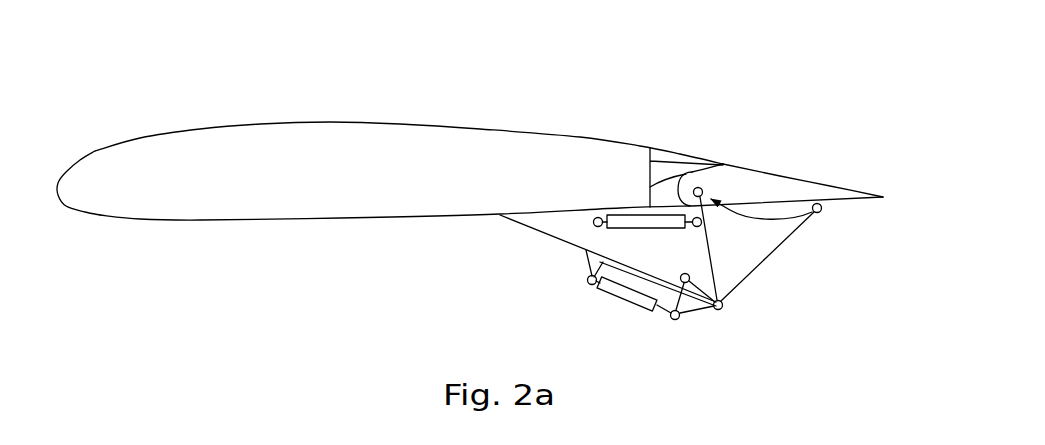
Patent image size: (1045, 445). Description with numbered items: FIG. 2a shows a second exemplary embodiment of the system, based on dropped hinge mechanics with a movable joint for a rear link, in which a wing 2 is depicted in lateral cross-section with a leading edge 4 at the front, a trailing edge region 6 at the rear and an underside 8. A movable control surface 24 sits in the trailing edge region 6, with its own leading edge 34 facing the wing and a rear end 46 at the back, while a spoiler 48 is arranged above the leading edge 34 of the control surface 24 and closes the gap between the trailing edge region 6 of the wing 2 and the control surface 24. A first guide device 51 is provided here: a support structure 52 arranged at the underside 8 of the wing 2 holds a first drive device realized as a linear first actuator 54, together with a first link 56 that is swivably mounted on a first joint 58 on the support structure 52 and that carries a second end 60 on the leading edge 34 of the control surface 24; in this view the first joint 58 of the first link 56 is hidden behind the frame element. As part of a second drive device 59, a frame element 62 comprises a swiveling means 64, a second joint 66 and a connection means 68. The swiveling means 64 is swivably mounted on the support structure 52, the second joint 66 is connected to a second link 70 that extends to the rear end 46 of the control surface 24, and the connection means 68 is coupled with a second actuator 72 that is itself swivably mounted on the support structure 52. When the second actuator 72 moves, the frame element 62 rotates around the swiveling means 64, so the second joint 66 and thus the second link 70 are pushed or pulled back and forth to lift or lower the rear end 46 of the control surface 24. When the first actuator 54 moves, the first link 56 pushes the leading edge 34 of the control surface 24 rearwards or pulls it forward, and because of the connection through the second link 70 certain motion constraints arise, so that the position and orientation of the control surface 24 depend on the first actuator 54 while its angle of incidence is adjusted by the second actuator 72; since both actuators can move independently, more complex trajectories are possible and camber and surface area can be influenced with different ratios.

The wing 2 is at (488, 185).
The leading edge 4 is at (59, 176).
The trailing edge region 6 is at (655, 132).
The underside 8 is at (377, 222).
The control surface 24 is at (785, 146).
The leading edge of the control surface 34 is at (648, 187).
The rear end of the control surface 46 is at (853, 172).
The spoiler 48 is at (691, 154).
The first guide device 51 is at (524, 244).
The support structure 52 is at (560, 238).
The first actuator 54 is at (614, 216).
The first link 56 is at (713, 267).
The first joint 58 is at (722, 292).
The second drive device 59 is at (728, 364).
The second end 60 is at (821, 212).
The frame element 62 is at (697, 304).
The swiveling means 64 is at (683, 276).
The second joint 66 is at (722, 311).
The connection means 68 is at (673, 320).
The second link 70 is at (776, 247).
The second actuator 72 is at (630, 302).